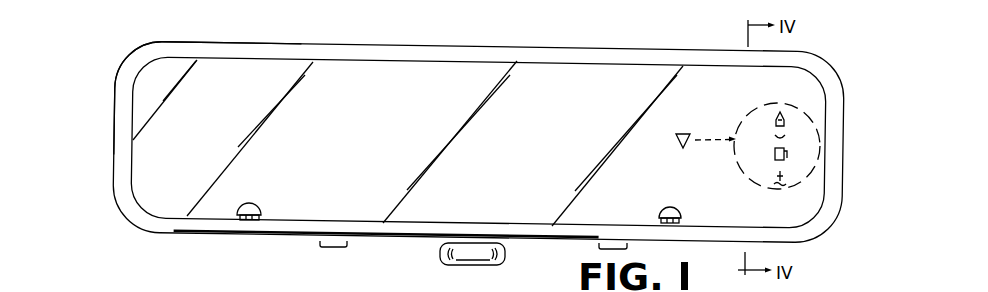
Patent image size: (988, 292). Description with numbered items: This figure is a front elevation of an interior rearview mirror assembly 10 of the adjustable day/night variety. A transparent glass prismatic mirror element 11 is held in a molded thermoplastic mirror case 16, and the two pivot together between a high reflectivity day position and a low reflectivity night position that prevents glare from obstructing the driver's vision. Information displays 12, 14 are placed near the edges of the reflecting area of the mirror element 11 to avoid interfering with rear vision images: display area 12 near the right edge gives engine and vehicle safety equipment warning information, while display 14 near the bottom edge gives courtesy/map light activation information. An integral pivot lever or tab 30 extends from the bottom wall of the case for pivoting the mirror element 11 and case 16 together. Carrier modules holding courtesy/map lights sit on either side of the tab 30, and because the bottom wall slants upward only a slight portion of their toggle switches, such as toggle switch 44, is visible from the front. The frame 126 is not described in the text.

The interior rearview mirror assembly 10 is at (498, 45).
The prismatic mirror element 11 is at (492, 143).
The information display 12 is at (765, 129).
The information display 14 is at (266, 208).
The mirror case 16 is at (311, 42).
The pivot lever or tab 30 is at (504, 257).
The toggle switch 44 is at (331, 248).
The mirror frame 126 is at (227, 44).